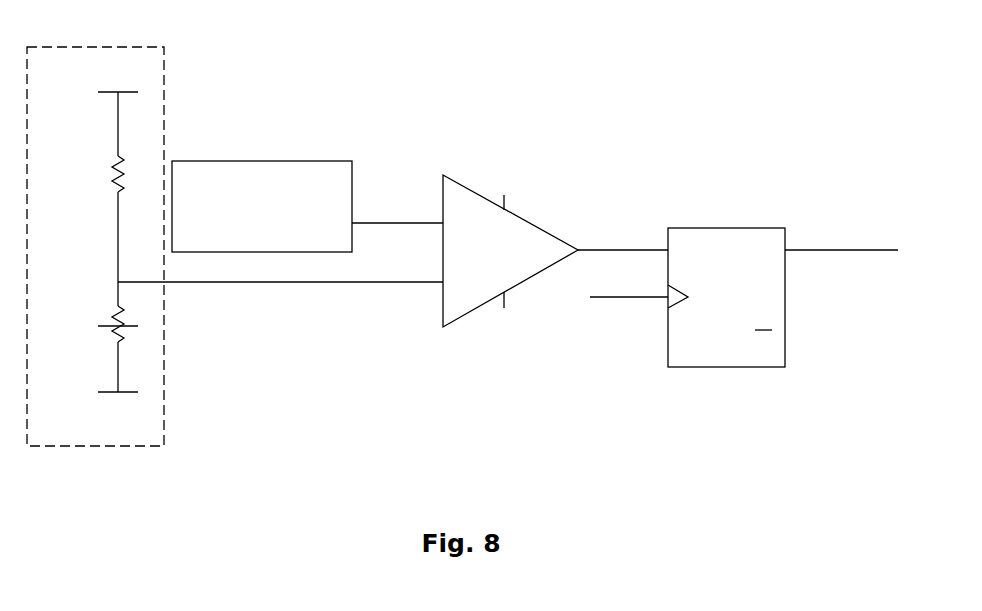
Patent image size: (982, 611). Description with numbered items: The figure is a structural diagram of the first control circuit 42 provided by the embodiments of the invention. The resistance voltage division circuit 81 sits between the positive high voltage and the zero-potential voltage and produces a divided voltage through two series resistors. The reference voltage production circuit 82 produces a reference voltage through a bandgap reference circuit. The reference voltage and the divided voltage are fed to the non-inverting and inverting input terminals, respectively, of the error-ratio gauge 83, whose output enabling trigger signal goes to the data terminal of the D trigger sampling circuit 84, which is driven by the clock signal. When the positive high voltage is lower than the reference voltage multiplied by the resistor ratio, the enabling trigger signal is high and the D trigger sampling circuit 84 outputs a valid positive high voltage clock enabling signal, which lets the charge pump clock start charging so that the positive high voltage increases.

The first control circuit 42 is at (588, 132).
The resistance voltage division circuit 81 is at (163, 77).
The reference voltage production circuit 82 is at (275, 161).
The error-ratio gauge 83 is at (522, 218).
The D trigger sampling circuit 84 is at (728, 228).